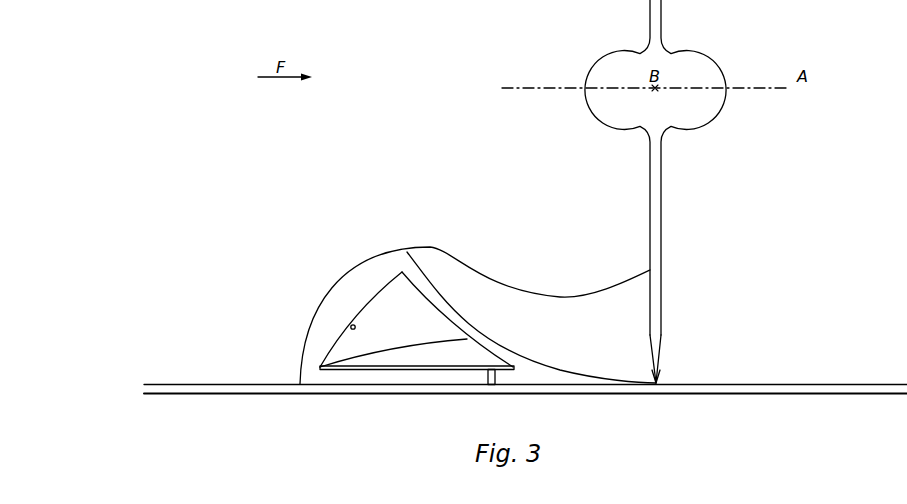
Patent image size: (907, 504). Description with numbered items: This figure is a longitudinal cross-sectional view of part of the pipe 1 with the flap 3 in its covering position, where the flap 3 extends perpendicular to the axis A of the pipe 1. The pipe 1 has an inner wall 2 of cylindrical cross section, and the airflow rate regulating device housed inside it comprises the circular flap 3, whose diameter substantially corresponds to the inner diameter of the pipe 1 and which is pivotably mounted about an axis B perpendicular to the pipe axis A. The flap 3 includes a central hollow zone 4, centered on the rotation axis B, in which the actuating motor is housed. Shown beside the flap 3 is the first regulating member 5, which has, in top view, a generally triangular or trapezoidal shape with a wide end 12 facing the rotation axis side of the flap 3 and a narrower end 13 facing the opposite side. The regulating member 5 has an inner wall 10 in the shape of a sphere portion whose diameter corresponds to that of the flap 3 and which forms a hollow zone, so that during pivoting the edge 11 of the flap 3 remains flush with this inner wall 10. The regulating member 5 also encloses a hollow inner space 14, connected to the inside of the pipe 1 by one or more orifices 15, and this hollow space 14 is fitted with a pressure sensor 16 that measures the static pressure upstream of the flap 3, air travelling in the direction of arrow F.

The pipe 1 is at (724, 388).
The inner wall 2 is at (783, 384).
The flap 3 is at (653, 225).
The central hollow zone 4 is at (673, 107).
The first regulating member 5 is at (353, 302).
The inner wall 10 is at (498, 333).
The edge 11 is at (658, 383).
The wide end 12 is at (338, 255).
The narrower end 13 is at (665, 346).
The hollow inner space 14 is at (347, 345).
The orifice 15 is at (350, 326).
The pressure sensor 16 is at (496, 376).